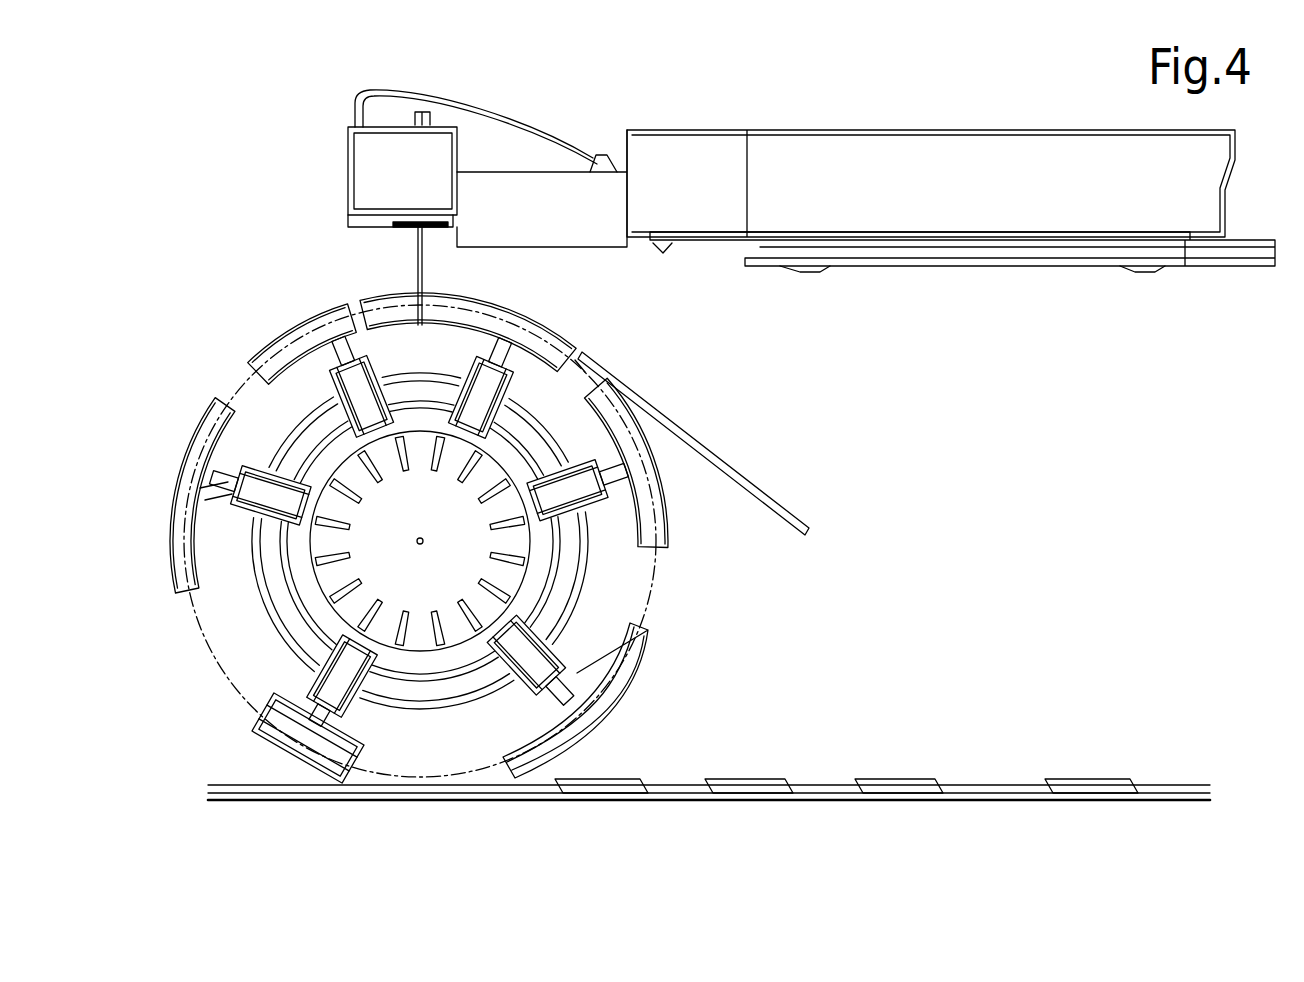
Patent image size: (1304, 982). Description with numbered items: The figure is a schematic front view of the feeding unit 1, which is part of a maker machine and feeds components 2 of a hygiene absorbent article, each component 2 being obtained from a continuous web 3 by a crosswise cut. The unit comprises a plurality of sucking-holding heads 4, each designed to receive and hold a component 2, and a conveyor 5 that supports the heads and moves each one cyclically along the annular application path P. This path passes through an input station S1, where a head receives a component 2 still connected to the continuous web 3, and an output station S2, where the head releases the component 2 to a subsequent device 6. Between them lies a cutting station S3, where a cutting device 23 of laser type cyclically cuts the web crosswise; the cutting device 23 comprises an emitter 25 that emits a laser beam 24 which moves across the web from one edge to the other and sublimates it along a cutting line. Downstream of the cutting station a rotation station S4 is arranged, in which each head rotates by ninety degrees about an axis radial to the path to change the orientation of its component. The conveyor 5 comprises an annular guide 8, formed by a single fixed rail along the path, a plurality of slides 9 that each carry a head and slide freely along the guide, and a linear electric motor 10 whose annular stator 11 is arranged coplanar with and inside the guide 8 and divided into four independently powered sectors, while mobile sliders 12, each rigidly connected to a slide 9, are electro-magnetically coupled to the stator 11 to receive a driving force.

The feeding unit 1 is at (1173, 653).
The component 2 is at (1097, 784).
The continuous web 3 is at (780, 520).
The sucking-holding head 4 is at (180, 592).
The conveyor 5 is at (870, 583).
The subsequent device 6 is at (966, 700).
The annular guide 8 is at (565, 587).
The slide 9 is at (343, 690).
The linear electric motor 10 is at (768, 655).
The annular stator 11 is at (322, 456).
The mobile slider 12 is at (467, 422).
The cutting device 23 is at (402, 146).
The laser beam 24 is at (415, 268).
The emitter 25 is at (392, 160).
The application path P is at (213, 655).
The input station S1 is at (640, 332).
The output station S2 is at (400, 826).
The cutting station S3 is at (458, 281).
The rotation station S4 is at (170, 398).